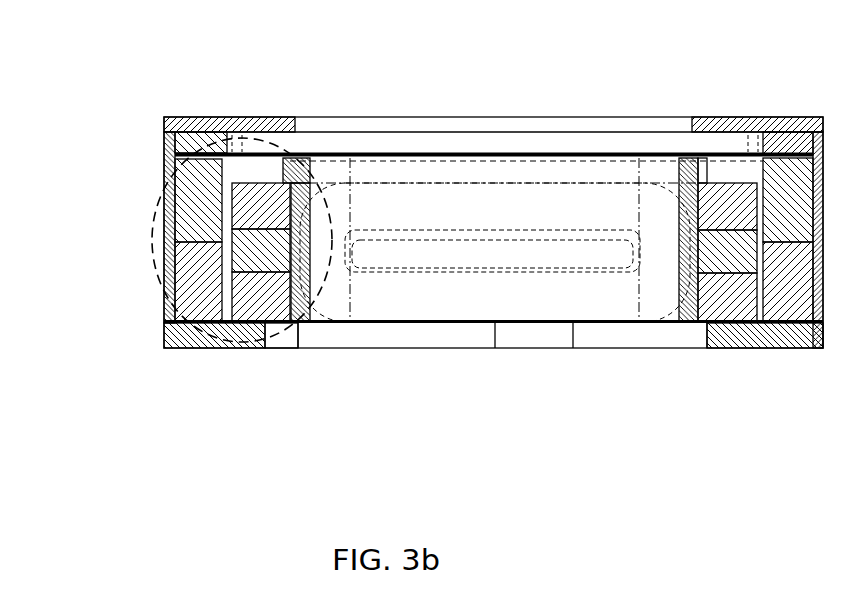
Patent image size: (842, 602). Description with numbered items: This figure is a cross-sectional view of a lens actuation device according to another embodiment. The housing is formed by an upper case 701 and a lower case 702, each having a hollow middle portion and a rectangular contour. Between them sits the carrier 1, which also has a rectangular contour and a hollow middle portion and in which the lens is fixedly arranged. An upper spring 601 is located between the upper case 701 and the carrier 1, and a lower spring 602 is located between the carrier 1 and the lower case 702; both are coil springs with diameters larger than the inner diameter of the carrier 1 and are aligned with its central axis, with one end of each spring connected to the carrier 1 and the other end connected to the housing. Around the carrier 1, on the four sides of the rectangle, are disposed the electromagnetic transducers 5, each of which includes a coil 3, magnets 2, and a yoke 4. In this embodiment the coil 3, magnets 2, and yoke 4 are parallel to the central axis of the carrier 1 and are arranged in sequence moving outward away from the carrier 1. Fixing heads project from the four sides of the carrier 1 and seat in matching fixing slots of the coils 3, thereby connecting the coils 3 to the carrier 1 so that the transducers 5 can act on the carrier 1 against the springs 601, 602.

The carrier 1 is at (685, 182).
The magnets 2 is at (202, 297).
The coil 3 is at (259, 298).
The yoke 4 is at (168, 258).
The transducers 5 is at (281, 327).
The upper spring 601 is at (478, 158).
The lower spring 602 is at (653, 322).
The upper case 701 is at (733, 117).
The lower case 702 is at (192, 342).